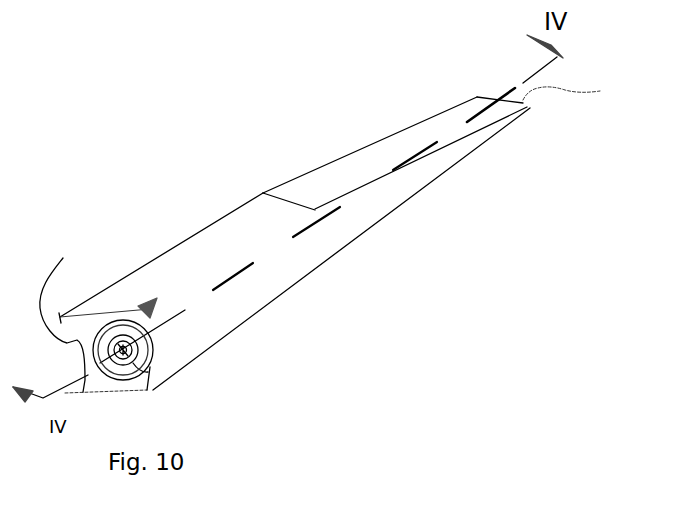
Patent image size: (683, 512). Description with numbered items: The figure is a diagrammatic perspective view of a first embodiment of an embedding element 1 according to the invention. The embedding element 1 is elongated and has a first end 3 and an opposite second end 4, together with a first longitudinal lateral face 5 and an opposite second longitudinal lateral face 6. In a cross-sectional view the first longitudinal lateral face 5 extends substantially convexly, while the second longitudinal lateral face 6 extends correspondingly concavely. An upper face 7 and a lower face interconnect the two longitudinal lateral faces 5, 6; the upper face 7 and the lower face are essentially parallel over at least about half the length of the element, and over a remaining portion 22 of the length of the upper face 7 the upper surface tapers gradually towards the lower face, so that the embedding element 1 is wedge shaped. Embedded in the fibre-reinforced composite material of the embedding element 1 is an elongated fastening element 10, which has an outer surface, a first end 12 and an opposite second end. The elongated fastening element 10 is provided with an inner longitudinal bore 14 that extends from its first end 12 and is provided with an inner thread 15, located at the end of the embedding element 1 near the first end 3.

The embedding element 1 is at (224, 116).
The first end 3 is at (148, 368).
The second end 4 is at (477, 98).
The first longitudinal lateral face 5 is at (153, 333).
The second longitudinal lateral face 6 is at (66, 300).
The upper face 7 is at (113, 297).
The elongated fastening element 10 is at (157, 302).
The first end 12 is at (147, 390).
The inner longitudinal bore 14 is at (95, 345).
The inner thread 15 is at (112, 232).
The remaining portion 22 is at (352, 160).